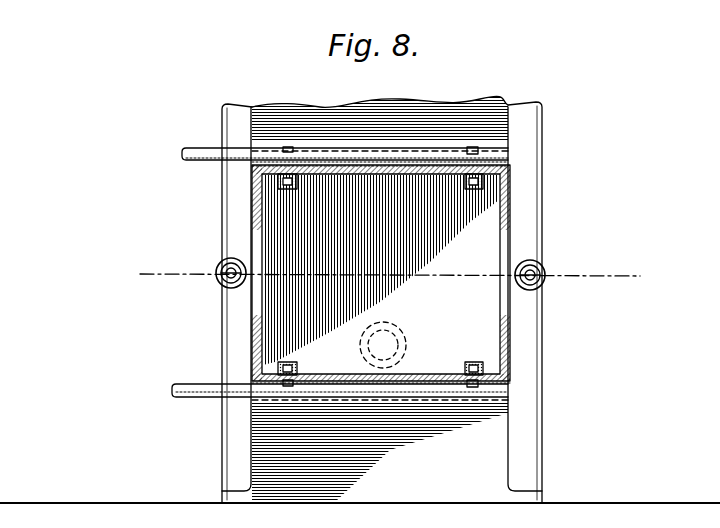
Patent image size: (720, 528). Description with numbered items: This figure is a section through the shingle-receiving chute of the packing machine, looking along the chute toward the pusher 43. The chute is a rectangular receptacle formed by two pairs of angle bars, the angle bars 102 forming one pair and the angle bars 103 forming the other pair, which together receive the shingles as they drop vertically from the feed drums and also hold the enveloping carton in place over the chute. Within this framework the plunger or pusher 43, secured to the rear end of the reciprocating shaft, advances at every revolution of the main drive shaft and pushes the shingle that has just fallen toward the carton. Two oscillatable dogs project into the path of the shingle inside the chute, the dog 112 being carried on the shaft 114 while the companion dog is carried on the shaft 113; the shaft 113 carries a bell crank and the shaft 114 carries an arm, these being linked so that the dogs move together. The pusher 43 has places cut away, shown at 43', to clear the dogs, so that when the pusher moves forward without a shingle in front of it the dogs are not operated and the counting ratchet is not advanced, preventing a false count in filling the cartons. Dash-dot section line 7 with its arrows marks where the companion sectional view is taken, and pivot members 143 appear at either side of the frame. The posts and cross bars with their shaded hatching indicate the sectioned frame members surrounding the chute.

The section line 7- 7 is at (188, 255).
The pusher 43 is at (428, 270).
The cut-away places 43' is at (380, 274).
The angle bars 102 is at (252, 203).
The angle bars 103 is at (252, 347).
The oscillatable dog 112 is at (465, 169).
The shaft 113 is at (188, 153).
The shaft 114 is at (178, 396).
The pivot 143 is at (223, 266).